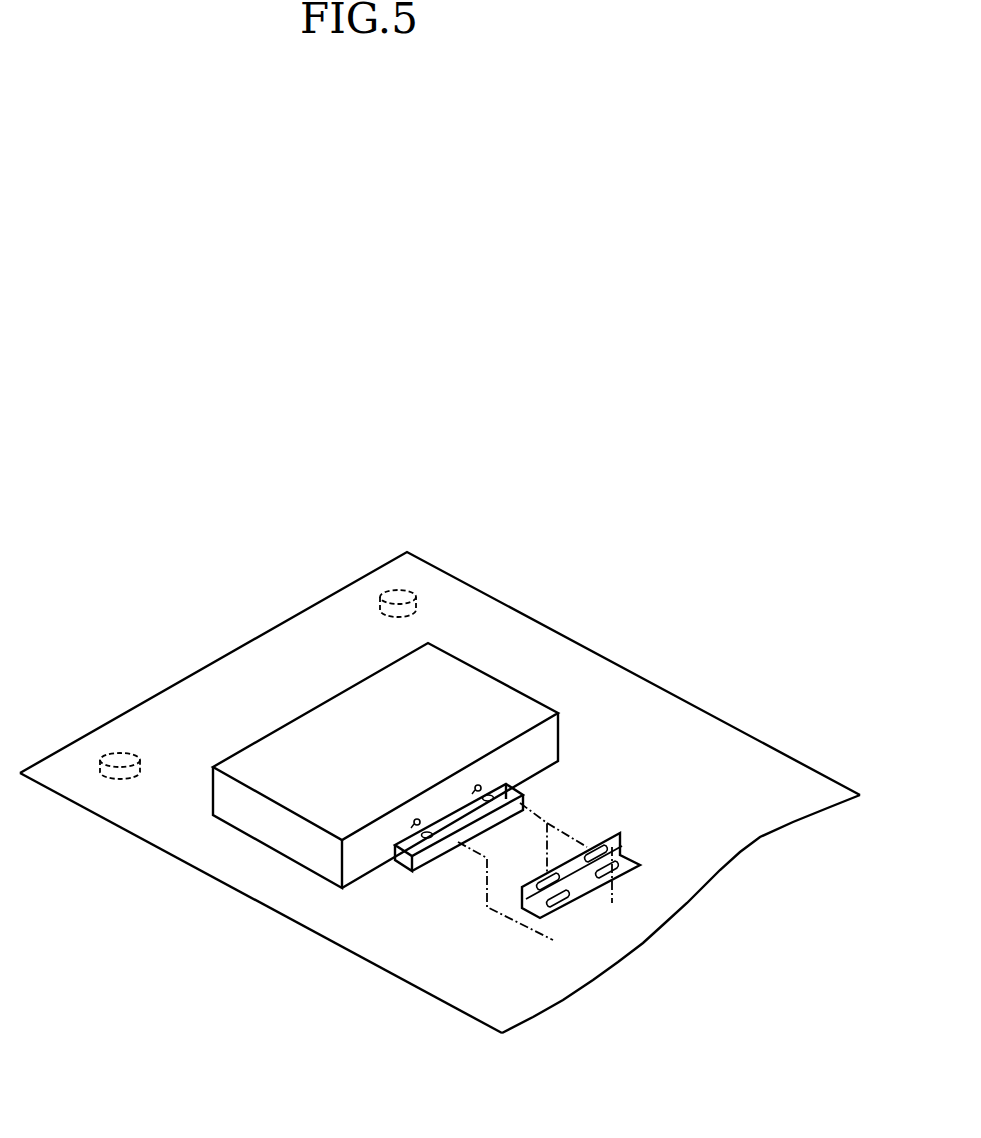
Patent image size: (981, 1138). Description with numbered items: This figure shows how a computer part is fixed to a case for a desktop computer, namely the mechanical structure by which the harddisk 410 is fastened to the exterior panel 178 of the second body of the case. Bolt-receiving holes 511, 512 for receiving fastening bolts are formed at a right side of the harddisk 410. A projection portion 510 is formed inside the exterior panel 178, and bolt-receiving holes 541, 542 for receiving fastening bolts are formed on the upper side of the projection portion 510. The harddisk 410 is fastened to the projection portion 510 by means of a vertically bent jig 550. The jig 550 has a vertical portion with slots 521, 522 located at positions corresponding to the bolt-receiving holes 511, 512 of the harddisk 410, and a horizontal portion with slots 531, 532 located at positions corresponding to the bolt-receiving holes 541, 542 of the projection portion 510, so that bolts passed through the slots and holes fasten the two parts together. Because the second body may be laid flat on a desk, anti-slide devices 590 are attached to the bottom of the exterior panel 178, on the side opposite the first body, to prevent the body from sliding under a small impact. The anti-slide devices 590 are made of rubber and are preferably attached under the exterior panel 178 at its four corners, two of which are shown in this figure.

The exterior panel 178 is at (423, 973).
The harddisk 410 is at (482, 677).
The projection portion 510 is at (433, 862).
The bolt-receiving hole 511 is at (418, 820).
The bolt-receiving hole 512 is at (478, 786).
The slot 521 is at (524, 903).
The slot 522 is at (603, 845).
The slot 531 is at (568, 900).
The slot 532 is at (637, 864).
The bolt-receiving hole 541 is at (424, 838).
The bolt-receiving hole 542 is at (492, 796).
The jig 550 is at (622, 858).
The anti-slide device 590 is at (398, 595).